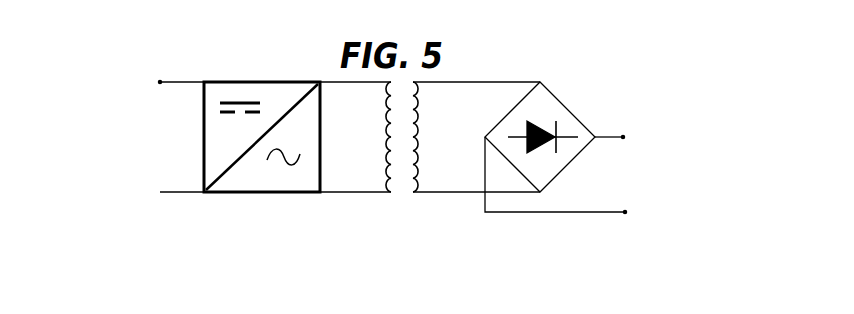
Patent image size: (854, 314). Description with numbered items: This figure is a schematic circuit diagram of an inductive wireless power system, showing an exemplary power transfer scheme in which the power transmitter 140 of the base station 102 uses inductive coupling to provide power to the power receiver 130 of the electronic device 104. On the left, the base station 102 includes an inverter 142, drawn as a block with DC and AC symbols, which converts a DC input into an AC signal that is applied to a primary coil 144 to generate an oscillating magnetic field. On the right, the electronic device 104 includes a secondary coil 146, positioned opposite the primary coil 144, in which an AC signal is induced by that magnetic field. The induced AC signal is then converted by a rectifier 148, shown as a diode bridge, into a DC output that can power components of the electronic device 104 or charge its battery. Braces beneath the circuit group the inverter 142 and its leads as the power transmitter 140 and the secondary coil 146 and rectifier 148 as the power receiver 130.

The base station 102 is at (110, 105).
The electronic device 104 is at (597, 67).
The power receiver 130 is at (665, 238).
The power transmitter 140 is at (390, 206).
The inverter 142 is at (265, 100).
The primary coil 144 is at (380, 172).
The secondary coil 146 is at (425, 175).
The rectifier 148 is at (545, 164).